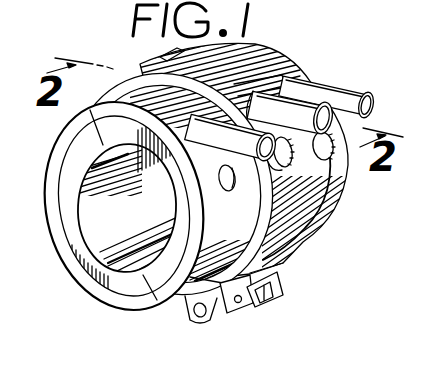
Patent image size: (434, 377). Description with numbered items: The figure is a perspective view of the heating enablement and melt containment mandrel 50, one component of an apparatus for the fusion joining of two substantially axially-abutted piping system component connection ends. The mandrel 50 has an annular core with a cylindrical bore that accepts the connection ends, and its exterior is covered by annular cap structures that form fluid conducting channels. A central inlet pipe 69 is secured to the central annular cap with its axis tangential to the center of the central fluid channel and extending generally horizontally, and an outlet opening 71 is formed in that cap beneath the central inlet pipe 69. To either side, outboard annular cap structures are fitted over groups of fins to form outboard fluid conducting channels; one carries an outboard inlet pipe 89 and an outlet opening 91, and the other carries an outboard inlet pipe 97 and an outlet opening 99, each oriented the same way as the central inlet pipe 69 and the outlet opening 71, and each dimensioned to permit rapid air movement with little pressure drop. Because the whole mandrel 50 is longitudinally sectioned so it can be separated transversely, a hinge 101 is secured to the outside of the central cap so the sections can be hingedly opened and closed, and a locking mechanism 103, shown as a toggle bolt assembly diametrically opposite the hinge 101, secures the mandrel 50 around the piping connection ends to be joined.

The heating enablement and melt containment mandrel 50 is at (85, 286).
The central inlet pipe 69 is at (288, 108).
The outlet opening 71 is at (281, 137).
The outboard inlet pipe 89 is at (268, 170).
The outlet opening 91 is at (255, 221).
The outboard inlet pipe 97 is at (347, 93).
The outlet opening 99 is at (333, 146).
The hinge 101 is at (207, 55).
The locking mechanism 103 is at (220, 313).